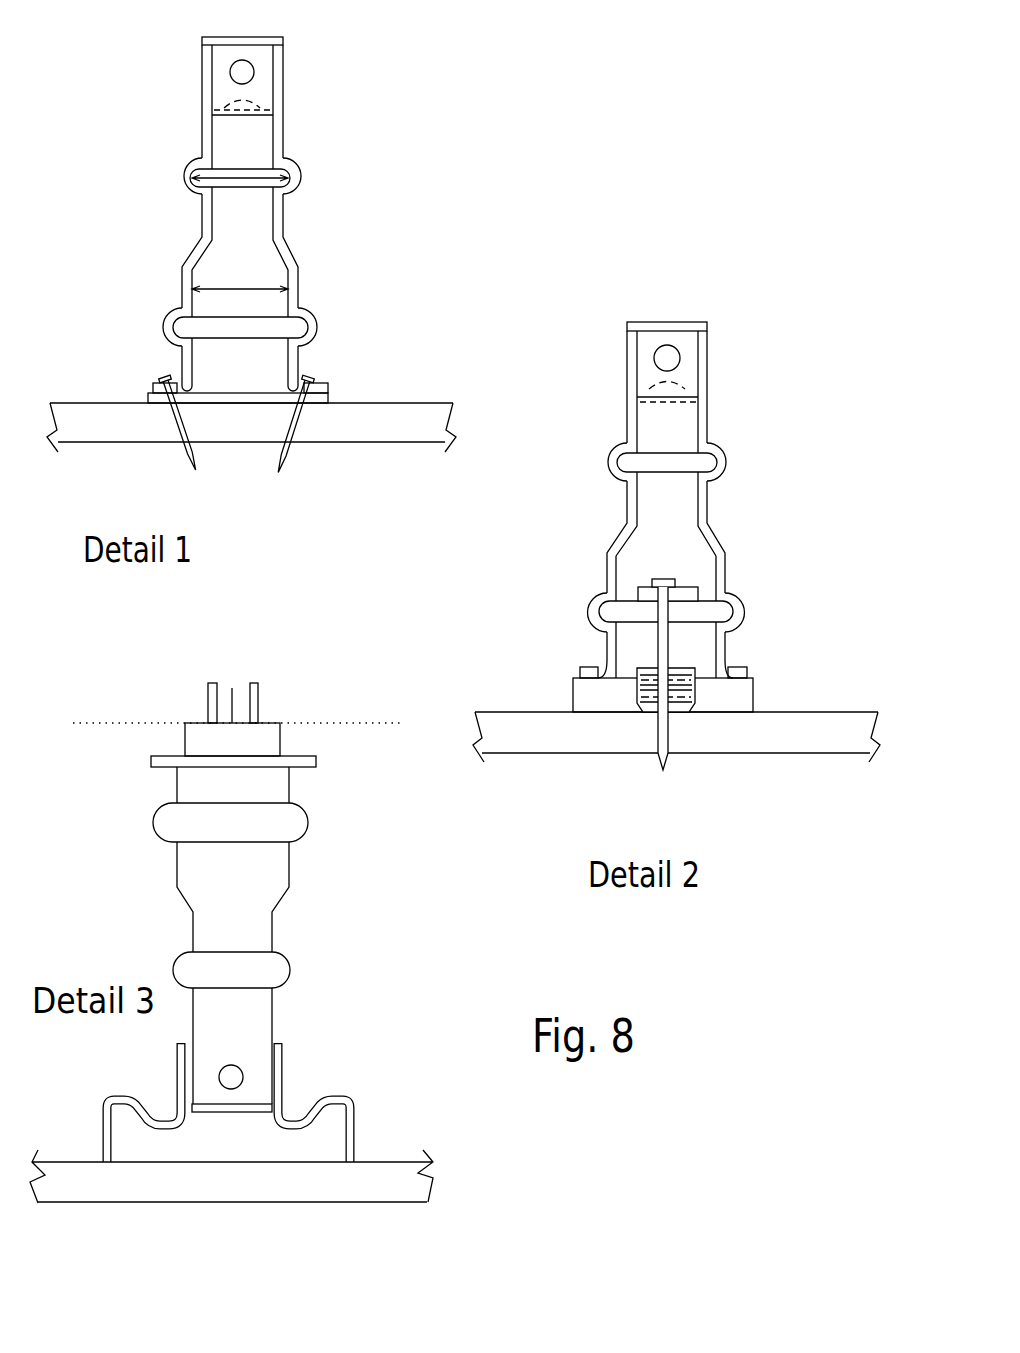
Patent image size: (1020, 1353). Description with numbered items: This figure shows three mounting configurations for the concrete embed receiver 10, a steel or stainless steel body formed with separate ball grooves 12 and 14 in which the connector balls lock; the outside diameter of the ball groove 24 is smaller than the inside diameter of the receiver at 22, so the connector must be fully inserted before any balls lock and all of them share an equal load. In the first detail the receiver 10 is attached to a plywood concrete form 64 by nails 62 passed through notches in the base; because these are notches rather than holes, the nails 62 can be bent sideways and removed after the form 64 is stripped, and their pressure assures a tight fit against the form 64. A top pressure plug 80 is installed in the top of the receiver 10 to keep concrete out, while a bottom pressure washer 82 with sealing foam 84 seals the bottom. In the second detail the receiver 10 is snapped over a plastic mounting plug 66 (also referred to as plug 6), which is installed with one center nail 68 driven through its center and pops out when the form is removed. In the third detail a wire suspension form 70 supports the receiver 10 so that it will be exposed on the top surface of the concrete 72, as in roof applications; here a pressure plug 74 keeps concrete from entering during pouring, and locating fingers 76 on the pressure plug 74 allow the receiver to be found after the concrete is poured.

The plastic mounting plug 6 is at (832, 755).
The concrete embed receiver 10 is at (283, 135).
The ball groove 12 is at (301, 182).
The ball groove 14 is at (313, 340).
The inside diameter of the receiver 22 is at (182, 287).
The ball groove 24 is at (184, 177).
The nails 62 is at (183, 453).
The concrete form 64 is at (405, 447).
The plastic mounting plug 66 is at (697, 710).
The center nail 68 is at (658, 643).
The wire suspension form 70 is at (355, 1137).
The top surface of the concrete 72 is at (327, 720).
The pressure plug 74 is at (232, 688).
The locating fingers 76 is at (202, 706).
The top pressure plug 80 is at (253, 36).
The bottom pressure washer 82 is at (257, 68).
The sealing foam 84 is at (330, 397).